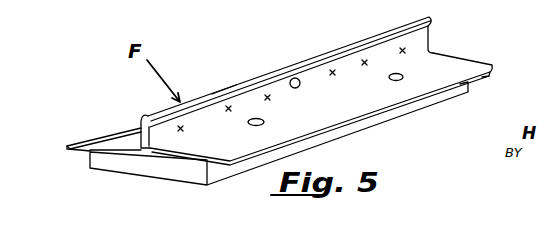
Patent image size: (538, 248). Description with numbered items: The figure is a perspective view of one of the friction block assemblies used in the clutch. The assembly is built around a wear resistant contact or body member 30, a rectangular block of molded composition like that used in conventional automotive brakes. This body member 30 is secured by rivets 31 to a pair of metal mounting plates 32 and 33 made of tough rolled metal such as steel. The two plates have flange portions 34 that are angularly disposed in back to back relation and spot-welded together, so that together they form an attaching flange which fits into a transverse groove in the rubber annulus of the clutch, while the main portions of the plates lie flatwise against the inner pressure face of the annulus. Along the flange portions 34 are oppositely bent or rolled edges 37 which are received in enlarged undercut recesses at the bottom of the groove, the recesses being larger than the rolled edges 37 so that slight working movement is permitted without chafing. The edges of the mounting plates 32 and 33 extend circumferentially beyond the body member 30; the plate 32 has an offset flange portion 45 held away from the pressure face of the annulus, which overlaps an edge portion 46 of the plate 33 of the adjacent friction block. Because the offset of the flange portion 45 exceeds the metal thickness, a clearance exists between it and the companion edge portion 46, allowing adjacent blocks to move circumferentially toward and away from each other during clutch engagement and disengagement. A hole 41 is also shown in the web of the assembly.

The body member 30 is at (172, 168).
The rivets 31 is at (264, 119).
The mounting plate 32 is at (120, 133).
The mounting plate 33 is at (378, 100).
The flange portions 34 is at (140, 114).
The rolled edges 37 is at (224, 91).
The hole 41 is at (294, 78).
The offset flange portion 45 is at (67, 152).
The edge portion 46 is at (482, 77).